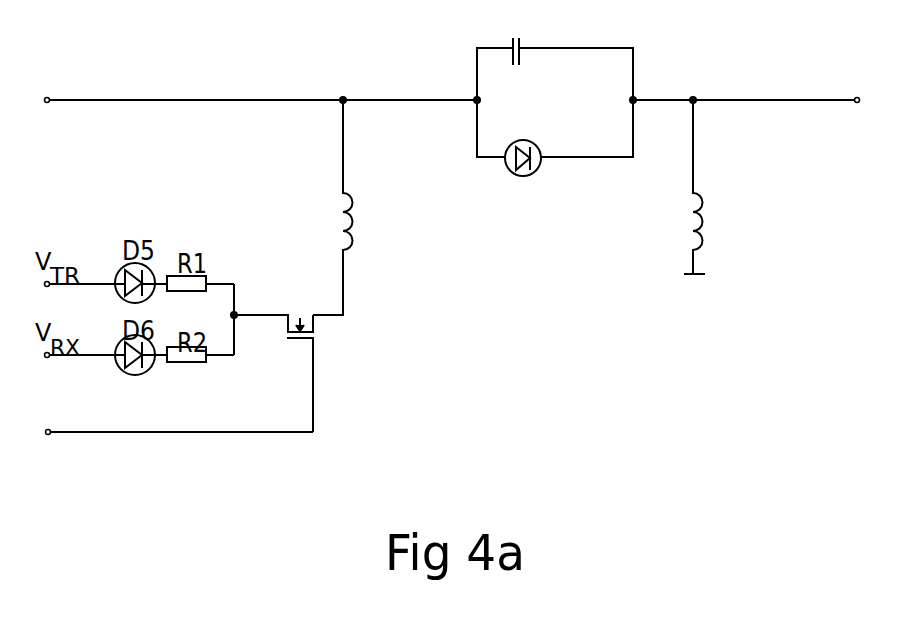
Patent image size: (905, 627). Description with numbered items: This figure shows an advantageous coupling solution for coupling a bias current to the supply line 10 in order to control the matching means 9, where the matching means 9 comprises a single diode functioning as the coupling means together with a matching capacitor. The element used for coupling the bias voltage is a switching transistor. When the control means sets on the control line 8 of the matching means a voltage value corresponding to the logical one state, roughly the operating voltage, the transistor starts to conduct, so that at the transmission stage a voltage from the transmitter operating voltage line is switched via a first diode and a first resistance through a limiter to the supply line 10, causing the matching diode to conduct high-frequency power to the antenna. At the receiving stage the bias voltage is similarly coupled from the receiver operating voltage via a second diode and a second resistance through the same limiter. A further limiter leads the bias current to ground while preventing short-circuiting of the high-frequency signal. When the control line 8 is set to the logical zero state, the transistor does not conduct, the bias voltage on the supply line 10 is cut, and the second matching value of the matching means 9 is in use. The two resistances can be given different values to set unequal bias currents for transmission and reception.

The supply line 10 is at (266, 100).
The matching means 9 is at (627, 365).
The control line 8 is at (253, 432).